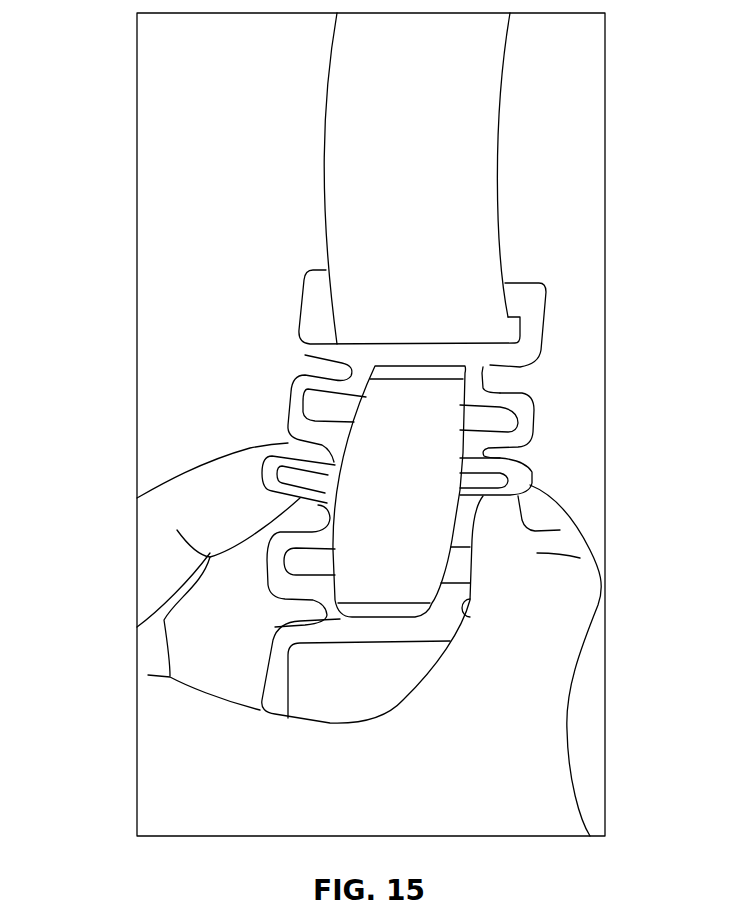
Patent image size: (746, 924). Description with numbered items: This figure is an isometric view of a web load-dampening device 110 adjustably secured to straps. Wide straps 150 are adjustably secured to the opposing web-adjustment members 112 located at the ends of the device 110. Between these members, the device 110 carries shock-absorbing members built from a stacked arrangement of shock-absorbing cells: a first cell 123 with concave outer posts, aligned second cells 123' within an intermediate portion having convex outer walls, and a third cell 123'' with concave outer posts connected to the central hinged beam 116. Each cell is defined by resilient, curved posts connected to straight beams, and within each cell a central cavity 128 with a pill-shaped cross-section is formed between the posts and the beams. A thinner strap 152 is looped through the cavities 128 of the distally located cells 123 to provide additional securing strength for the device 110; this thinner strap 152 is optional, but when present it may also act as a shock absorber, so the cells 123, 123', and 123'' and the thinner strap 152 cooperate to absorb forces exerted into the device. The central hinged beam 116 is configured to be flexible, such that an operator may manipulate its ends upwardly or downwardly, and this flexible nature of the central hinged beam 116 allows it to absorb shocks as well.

The web load-dampening device 110 is at (553, 338).
The web-adjustment member 112 is at (308, 337).
The central hinged beam 116 is at (270, 477).
The shock-absorbing cell 123 is at (205, 491).
The second cell 123' is at (579, 425).
The third cell 123'' is at (576, 472).
The central cavity 128 is at (505, 366).
The strap 150 is at (473, 122).
The thinner strap 152 is at (437, 528).